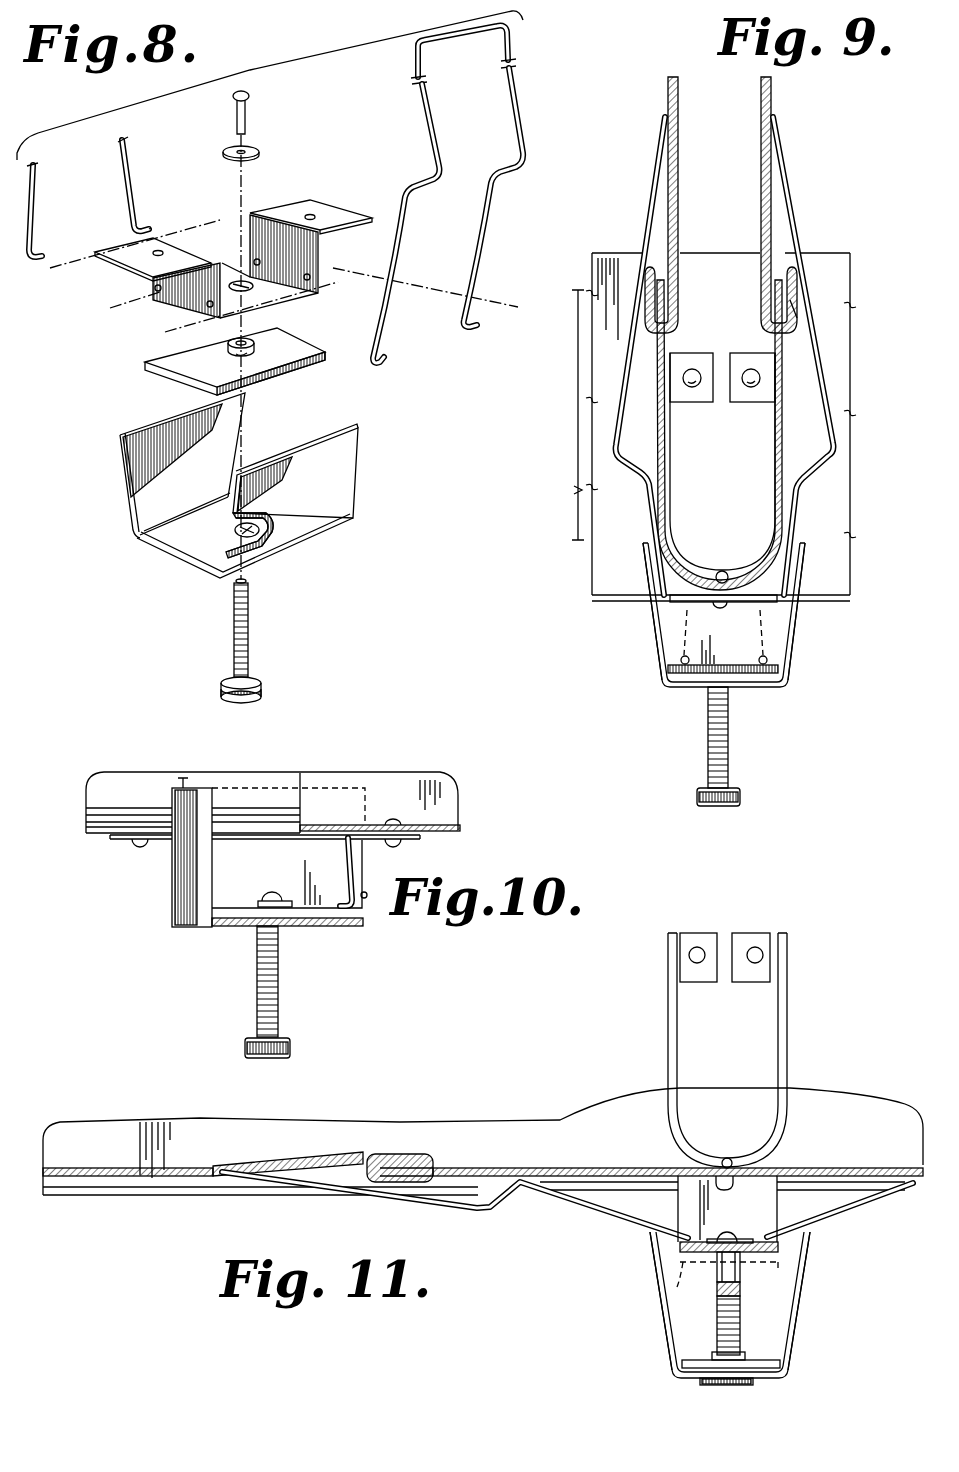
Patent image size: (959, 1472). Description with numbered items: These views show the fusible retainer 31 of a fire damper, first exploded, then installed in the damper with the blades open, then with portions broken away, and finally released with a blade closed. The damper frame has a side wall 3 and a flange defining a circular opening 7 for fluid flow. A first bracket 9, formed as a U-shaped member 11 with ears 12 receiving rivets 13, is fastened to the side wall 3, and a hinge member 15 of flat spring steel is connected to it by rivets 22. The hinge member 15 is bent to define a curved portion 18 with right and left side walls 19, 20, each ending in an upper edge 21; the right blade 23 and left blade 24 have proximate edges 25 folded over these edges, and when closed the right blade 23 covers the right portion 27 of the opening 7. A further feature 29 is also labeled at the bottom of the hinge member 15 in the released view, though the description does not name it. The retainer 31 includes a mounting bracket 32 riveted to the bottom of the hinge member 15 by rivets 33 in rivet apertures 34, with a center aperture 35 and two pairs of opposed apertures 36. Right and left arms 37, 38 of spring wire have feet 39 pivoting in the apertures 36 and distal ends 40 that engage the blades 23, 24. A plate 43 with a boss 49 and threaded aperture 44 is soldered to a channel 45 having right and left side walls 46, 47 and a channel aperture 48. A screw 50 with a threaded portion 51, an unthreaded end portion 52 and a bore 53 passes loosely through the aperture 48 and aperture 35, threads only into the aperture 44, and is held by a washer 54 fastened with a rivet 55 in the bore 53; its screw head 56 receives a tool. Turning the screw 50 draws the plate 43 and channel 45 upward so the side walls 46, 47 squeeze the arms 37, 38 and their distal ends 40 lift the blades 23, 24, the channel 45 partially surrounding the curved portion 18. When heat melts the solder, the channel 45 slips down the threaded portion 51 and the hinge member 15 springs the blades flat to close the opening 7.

In FIG. 9, the side wall 3 is at (578, 490).
In FIG. 11, the side wall 3 is at (858, 1128).
In FIG. 9, the circular opening 7 is at (827, 602).
In FIG. 11, the circular opening 7 is at (884, 1190).
In FIG. 9, the first bracket 9 is at (785, 410).
In FIG. 9, the U-shaped member 11 is at (722, 446).
In FIG. 11, the U-shaped member 11 is at (747, 1034).
In FIG. 9, the ears 12 is at (718, 404).
In FIG. 11, the ears 12 is at (732, 983).
In FIG. 9, the rivets 13 is at (748, 369).
In FIG. 11, the rivets 13 is at (750, 948).
In FIG. 9, the hinge member 15 is at (657, 500).
In FIG. 10, the hinge member 15 is at (150, 773).
In FIG. 11, the hinge member 15 is at (580, 1169).
In FIG. 9, the curved portion 18 is at (762, 604).
In FIG. 11, the curved portion 18 is at (694, 1150).
In FIG. 9, the right side wall 19 is at (780, 445).
In FIG. 9, the left side wall 20 is at (656, 452).
In FIG. 9, the upper edge 21 is at (668, 275).
In FIG. 11, the upper edge 21 is at (368, 1178).
In FIG. 9, the rivets 22 is at (730, 572).
In FIG. 11, the rivets 22 is at (731, 1160).
In FIG. 9, the right blade 23 is at (771, 97).
In FIG. 9, the left blade 24 is at (668, 100).
In FIG. 11, the left blade 24 is at (218, 1166).
In FIG. 9, the proximate edge 25 is at (797, 308).
In FIG. 11, the proximate edge 25 is at (432, 1156).
In FIG. 9, the right portion 27 is at (618, 602).
In FIG. 11, the right portion 27 is at (211, 1191).
In FIG. 11, the notch 29 is at (718, 1160).
In FIG. 8, the fusible retainer 31 is at (262, 72).
In FIG. 9, the fusible retainer 31 is at (848, 455).
In FIG. 11, the fusible retainer 31 is at (610, 1256).
In FIG. 8, the mounting bracket 32 is at (372, 219).
In FIG. 9, the mounting bracket 32 is at (698, 603).
In FIG. 10, the mounting bracket 32 is at (112, 839).
In FIG. 11, the mounting bracket 32 is at (779, 1197).
In FIG. 9, the rivets 33 is at (714, 572).
In FIG. 10, the rivets 33 is at (139, 846).
In FIG. 11, the rivets 33 is at (760, 1156).
In FIG. 8, the rivet apertures 34 is at (312, 215).
In FIG. 8, the center aperture 35 is at (256, 290).
In FIG. 8, the opposed apertures 36 is at (155, 289).
In FIG. 9, the opposed apertures 36 is at (681, 661).
In FIG. 8, the right arm 37 is at (419, 125).
In FIG. 9, the right arm 37 is at (826, 356).
In FIG. 11, the right arm 37 is at (840, 1214).
In FIG. 8, the left arm 38 is at (133, 178).
In FIG. 9, the left arm 38 is at (641, 233).
In FIG. 10, the left arm 38 is at (184, 779).
In FIG. 11, the left arm 38 is at (478, 1210).
In FIG. 8, the feet 39 is at (147, 228).
In FIG. 9, the feet 39 is at (768, 660).
In FIG. 10, the feet 39 is at (369, 893).
In FIG. 8, the distal end 40 is at (470, 40).
In FIG. 8, the plate 43 is at (147, 366).
In FIG. 9, the plate 43 is at (698, 674).
In FIG. 10, the plate 43 is at (338, 927).
In FIG. 11, the plate 43 is at (660, 1286).
In FIG. 8, the threaded aperture 44 is at (242, 353).
In FIG. 8, the channel 45 is at (235, 485).
In FIG. 9, the channel 45 is at (729, 628).
In FIG. 11, the channel 45 is at (731, 1305).
In FIG. 8, the right side wall 46 is at (345, 507).
In FIG. 9, the right side wall 46 is at (800, 577).
In FIG. 10, the right side wall 46 is at (181, 857).
In FIG. 11, the right side wall 46 is at (805, 1290).
In FIG. 8, the left side wall 47 is at (143, 492).
In FIG. 9, the left side wall 47 is at (646, 577).
In FIG. 10, the left side wall 47 is at (222, 866).
In FIG. 11, the left side wall 47 is at (653, 1302).
In FIG. 8, the channel aperture 48 is at (236, 533).
In FIG. 8, the boss 49 is at (257, 347).
In FIG. 11, the boss 49 is at (716, 1355).
In FIG. 8, the screw 50 is at (221, 689).
In FIG. 9, the screw 50 is at (697, 798).
In FIG. 11, the screw 50 is at (702, 1356).
In FIG. 8, the threaded portion 51 is at (248, 635).
In FIG. 9, the threaded portion 51 is at (719, 762).
In FIG. 10, the threaded portion 51 is at (290, 1050).
In FIG. 11, the threaded portion 51 is at (706, 1318).
In FIG. 8, the unthreaded end portion 52 is at (250, 599).
In FIG. 8, the bore 53 is at (250, 580).
In FIG. 11, the bore 53 is at (718, 1289).
In FIG. 8, the washer 54 is at (259, 153).
In FIG. 10, the washer 54 is at (258, 901).
In FIG. 11, the washer 54 is at (752, 1254).
In FIG. 8, the rivet 55 is at (250, 97).
In FIG. 10, the rivet 55 is at (274, 894).
In FIG. 11, the rivet 55 is at (740, 1241).
In FIG. 8, the screw head 56 is at (262, 694).
In FIG. 9, the screw head 56 is at (740, 806).